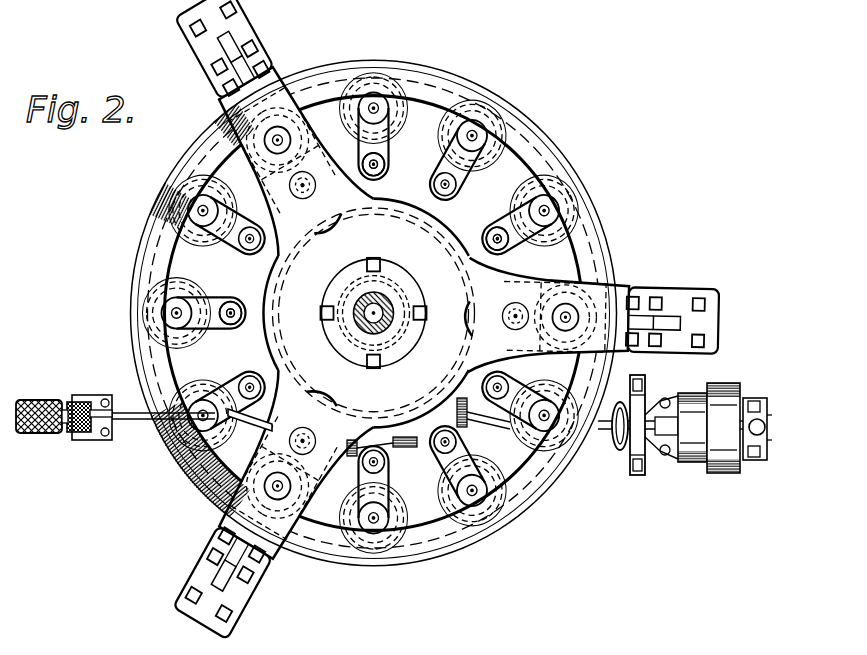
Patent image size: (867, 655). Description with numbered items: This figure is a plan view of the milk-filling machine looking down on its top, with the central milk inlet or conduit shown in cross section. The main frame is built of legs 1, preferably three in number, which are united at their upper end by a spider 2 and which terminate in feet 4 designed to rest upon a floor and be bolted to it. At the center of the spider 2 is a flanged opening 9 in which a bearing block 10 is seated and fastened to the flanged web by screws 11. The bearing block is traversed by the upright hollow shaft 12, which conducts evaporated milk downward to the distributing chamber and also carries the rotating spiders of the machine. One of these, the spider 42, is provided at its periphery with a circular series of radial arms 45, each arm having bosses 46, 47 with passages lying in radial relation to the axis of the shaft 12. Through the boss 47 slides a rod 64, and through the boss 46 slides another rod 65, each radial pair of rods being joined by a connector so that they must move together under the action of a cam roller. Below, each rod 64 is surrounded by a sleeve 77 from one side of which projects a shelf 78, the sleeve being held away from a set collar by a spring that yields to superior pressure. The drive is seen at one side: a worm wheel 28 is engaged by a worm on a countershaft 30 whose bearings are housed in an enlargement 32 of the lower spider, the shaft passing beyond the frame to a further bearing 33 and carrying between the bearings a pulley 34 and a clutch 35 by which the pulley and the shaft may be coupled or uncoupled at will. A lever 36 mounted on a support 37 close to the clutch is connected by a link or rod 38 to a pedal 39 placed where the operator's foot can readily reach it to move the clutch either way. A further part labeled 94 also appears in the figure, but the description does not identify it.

The legs 1 is at (278, 76).
The spider 2 is at (365, 313).
The feet 4 is at (205, 45).
The flanged opening 9 is at (342, 290).
The bearing block 10 is at (346, 343).
The screws 11 is at (427, 322).
The hollow shaft 12 is at (384, 300).
The worm wheel 28 is at (348, 398).
The countershaft 30 is at (472, 432).
The enlargement 32 is at (388, 462).
The bearing 33 is at (753, 419).
The pulley 34 is at (725, 474).
The clutch 35 is at (681, 463).
The lever 36 is at (620, 455).
The support 37 is at (639, 406).
The link or rod 38 is at (150, 421).
The pedal 39 is at (55, 400).
The spider 42 is at (480, 238).
The radial arms 45 is at (392, 150).
The boss 46 is at (183, 298).
The boss 47 is at (437, 186).
The rods 64 is at (232, 300).
The rod 65 is at (540, 211).
The sleeve 77 is at (457, 120).
The shelf 78 is at (572, 281).
The ring 94 is at (520, 140).